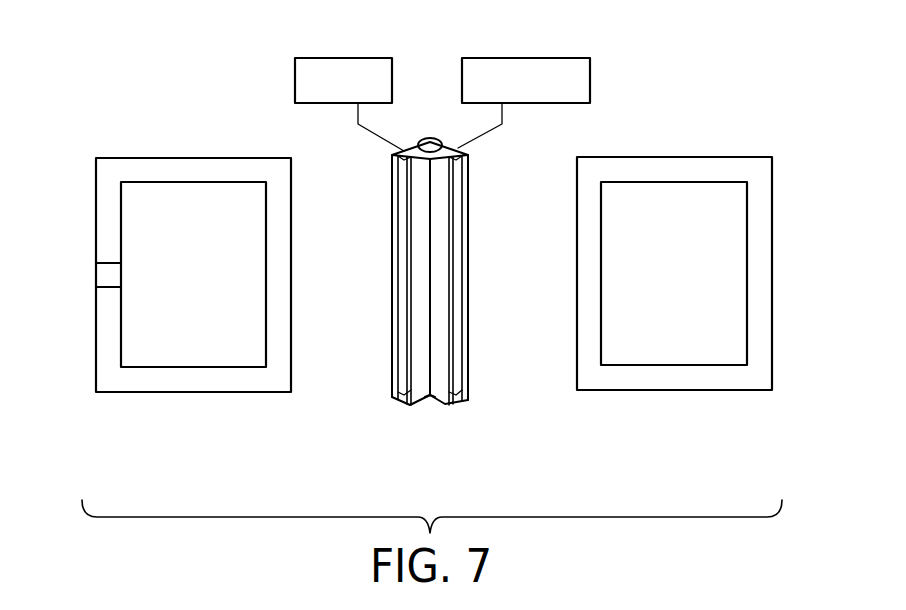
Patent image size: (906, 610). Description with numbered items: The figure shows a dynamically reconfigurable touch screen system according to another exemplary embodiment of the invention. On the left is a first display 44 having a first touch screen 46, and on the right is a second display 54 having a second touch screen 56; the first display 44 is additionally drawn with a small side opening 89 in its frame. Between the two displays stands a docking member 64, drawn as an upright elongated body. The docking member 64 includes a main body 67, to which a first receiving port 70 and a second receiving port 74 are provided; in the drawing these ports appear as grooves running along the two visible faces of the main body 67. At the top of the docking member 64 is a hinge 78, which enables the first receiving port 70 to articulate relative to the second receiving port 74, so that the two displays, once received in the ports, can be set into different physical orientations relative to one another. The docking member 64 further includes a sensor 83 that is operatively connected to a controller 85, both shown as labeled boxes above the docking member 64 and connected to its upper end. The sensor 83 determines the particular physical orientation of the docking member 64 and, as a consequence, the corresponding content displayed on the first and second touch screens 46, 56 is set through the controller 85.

The first display 44 is at (119, 151).
The first touch screen 46 is at (193, 196).
The channel 89 is at (103, 274).
The second display 54 is at (745, 150).
The second touch screen 56 is at (665, 196).
The sensor 83 is at (295, 78).
The controller 85 is at (590, 80).
The docking member 64 is at (444, 265).
The first receiving port 70 is at (392, 362).
The second receiving port 74 is at (468, 234).
The hinge 78 is at (430, 138).
The main body 67 is at (438, 414).